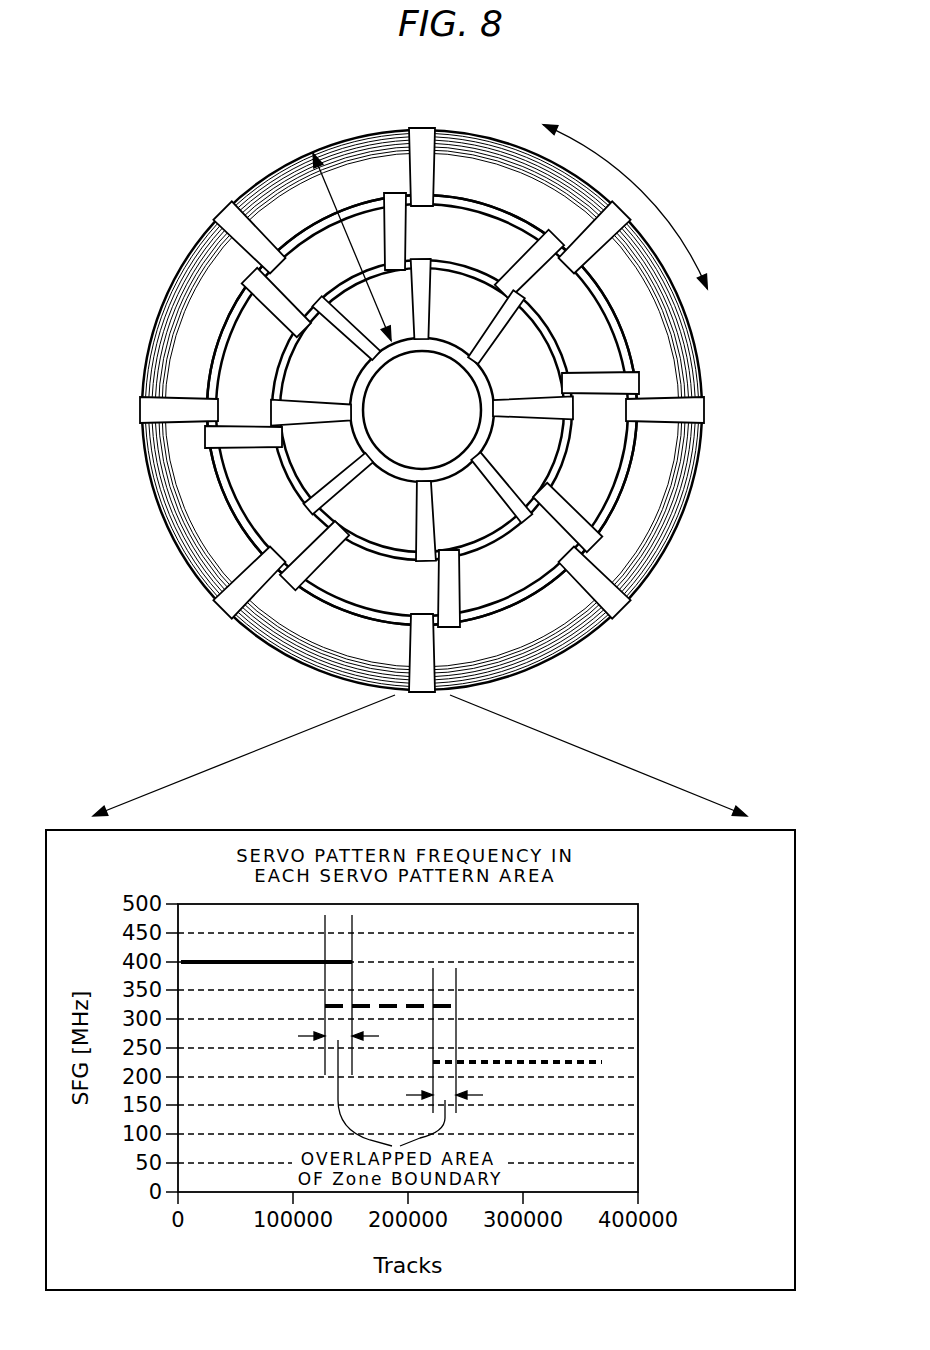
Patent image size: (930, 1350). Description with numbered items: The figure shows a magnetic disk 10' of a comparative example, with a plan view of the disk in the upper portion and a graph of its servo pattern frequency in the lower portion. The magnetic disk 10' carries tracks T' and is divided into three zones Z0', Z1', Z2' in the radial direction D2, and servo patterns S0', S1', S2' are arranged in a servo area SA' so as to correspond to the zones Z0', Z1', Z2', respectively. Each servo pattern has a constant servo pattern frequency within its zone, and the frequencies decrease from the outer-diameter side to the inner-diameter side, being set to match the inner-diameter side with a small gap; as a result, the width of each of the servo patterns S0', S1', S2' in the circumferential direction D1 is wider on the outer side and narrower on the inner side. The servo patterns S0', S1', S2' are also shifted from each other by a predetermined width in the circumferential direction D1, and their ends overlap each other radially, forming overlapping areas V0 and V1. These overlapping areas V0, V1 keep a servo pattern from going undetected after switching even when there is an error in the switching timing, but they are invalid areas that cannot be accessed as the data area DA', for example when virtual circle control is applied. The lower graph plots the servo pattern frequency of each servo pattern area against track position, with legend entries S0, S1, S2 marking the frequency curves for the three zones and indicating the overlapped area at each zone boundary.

The magnetic disk 10' is at (586, 282).
The tracks T' is at (421, 387).
The data area DA' is at (398, 410).
The servo area SA' is at (223, 600).
The zone Z0' is at (397, 410).
The zone Z1' is at (404, 410).
The zone Z2' is at (409, 410).
The overlapping area V0 is at (293, 500).
The overlapping area V1 is at (413, 410).
The servo pattern S0' is at (422, 410).
The servo pattern S1' is at (422, 410).
The servo pattern S2' is at (422, 410).
The circumferential direction D1 is at (625, 207).
The radial direction D2 is at (352, 246).
The servo pattern frequency of zone 0 S0 is at (593, 1024).
The servo pattern frequency of zone 1 S1 is at (539, 1034).
The servo pattern frequency of zone 2 S2 is at (467, 1038).